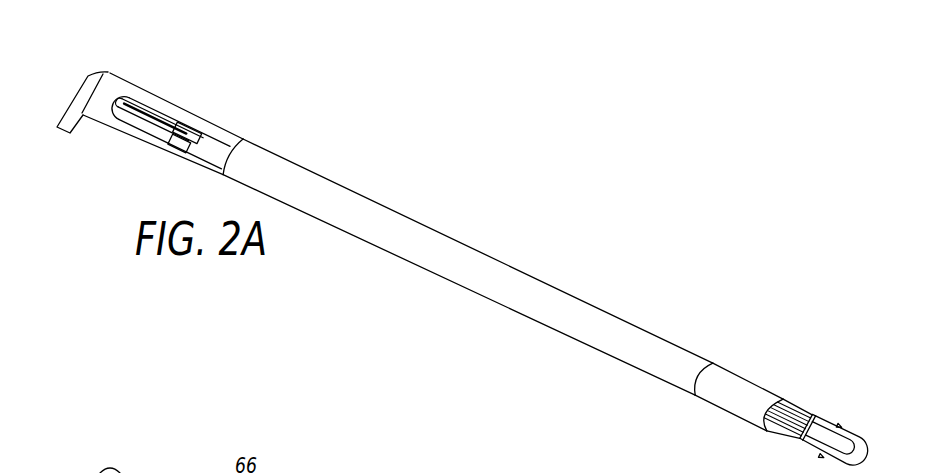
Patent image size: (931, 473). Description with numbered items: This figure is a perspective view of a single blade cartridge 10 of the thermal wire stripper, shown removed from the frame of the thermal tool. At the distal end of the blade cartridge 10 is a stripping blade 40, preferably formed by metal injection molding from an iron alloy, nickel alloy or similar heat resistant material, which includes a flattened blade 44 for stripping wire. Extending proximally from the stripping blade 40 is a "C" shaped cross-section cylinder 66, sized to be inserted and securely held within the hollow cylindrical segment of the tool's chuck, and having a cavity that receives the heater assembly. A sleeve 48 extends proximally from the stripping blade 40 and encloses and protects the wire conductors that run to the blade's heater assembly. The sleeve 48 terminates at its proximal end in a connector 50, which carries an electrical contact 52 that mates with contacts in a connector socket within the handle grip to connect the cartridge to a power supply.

The blade cartridge 10 is at (438, 204).
The stripping blade 40 is at (74, 79).
The flattened blade 44 is at (62, 134).
The sleeve 48 is at (533, 290).
The connector 50 is at (739, 376).
The electrical contact 52 is at (833, 412).
The "C" shaped cross-section cylinder 66 is at (188, 111).